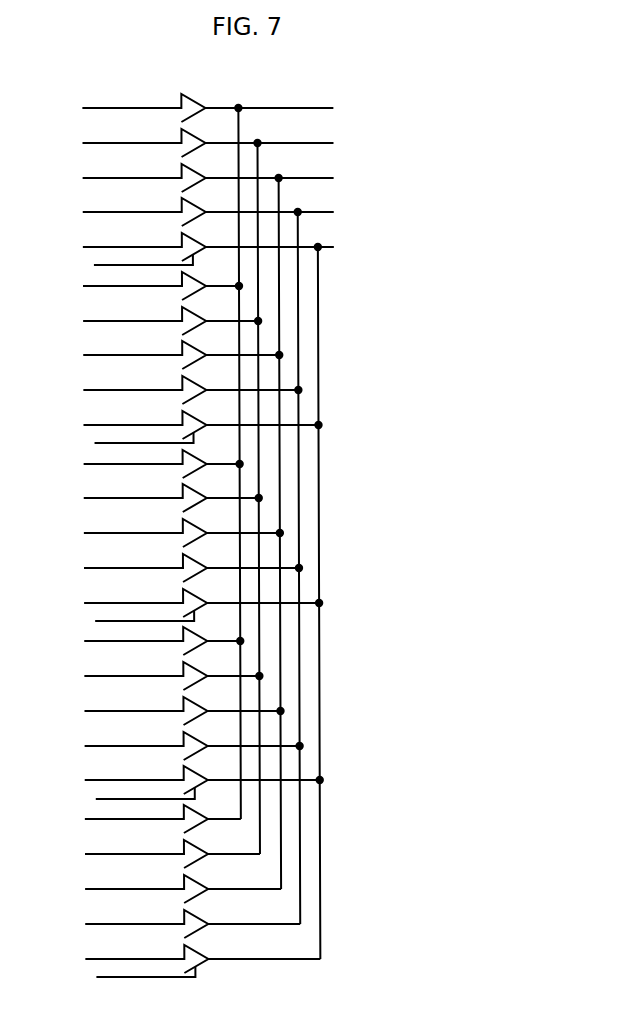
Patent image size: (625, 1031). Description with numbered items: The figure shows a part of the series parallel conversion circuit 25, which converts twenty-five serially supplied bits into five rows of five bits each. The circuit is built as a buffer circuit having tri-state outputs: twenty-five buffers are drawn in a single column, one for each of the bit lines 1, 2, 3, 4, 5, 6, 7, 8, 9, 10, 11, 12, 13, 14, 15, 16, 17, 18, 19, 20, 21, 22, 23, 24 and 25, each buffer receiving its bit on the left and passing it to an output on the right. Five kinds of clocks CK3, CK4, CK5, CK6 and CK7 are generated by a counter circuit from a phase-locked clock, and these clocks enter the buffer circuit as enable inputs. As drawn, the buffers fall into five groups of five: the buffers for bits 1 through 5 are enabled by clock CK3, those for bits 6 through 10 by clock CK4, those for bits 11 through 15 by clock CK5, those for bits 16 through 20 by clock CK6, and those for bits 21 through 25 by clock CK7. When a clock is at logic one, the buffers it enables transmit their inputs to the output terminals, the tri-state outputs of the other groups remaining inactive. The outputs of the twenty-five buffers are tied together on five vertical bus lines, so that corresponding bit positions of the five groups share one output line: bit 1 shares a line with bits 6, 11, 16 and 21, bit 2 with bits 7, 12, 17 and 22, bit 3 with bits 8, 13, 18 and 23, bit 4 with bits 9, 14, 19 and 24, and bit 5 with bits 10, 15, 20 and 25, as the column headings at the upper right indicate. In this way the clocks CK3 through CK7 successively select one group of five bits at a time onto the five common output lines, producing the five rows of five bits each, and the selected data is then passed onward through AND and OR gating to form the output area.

The input/output signal line 1 buffer 1 is at (208, 108).
The input/output signal line 2 buffer 2 is at (208, 143).
The input/output signal line 3 buffer 3 is at (209, 178).
The input/output signal line 4 buffer 4 is at (209, 212).
The input/output signal line 5 buffer 5 is at (209, 247).
The input/output signal line 6 buffer 6 is at (227, 200).
The input/output signal line 7 buffer 7 is at (227, 235).
The input/output signal line 8 buffer 8 is at (228, 269).
The input/output signal line 9 buffer 9 is at (228, 304).
The input/output signal line 10 buffer 10 is at (232, 339).
The input/output signal line 11 buffer 11 is at (250, 289).
The input/output signal line 12 buffer 12 is at (250, 323).
The area 13 is at (251, 358).
The input/output signal line 14 buffer 14 is at (251, 393).
The input/output signal line 15 buffer 15 is at (251, 428).
The input/output signal line 16 buffer 16 is at (271, 377).
The input/output signal line 17 buffer 17 is at (271, 412).
The input/output signal line 18 buffer 18 is at (272, 447).
The input/output signal line 19 buffer 19 is at (272, 482).
The input/output signal line 20 buffer 20 is at (272, 516).
The input/output signal line 21 buffer 21 is at (289, 466).
The OR gate 22 is at (289, 501).
The input/output signal line 23 buffer 23 is at (290, 536).
The input/output signal line 24 buffer 24 is at (290, 571).
The series parallel conversion circuit 25 is at (290, 606).
The clock CK3 is at (217, 269).
The clock CK4 is at (239, 358).
The clock CK5 is at (259, 447).
The clock CK6 is at (279, 536).
The clock CK7 is at (298, 625).